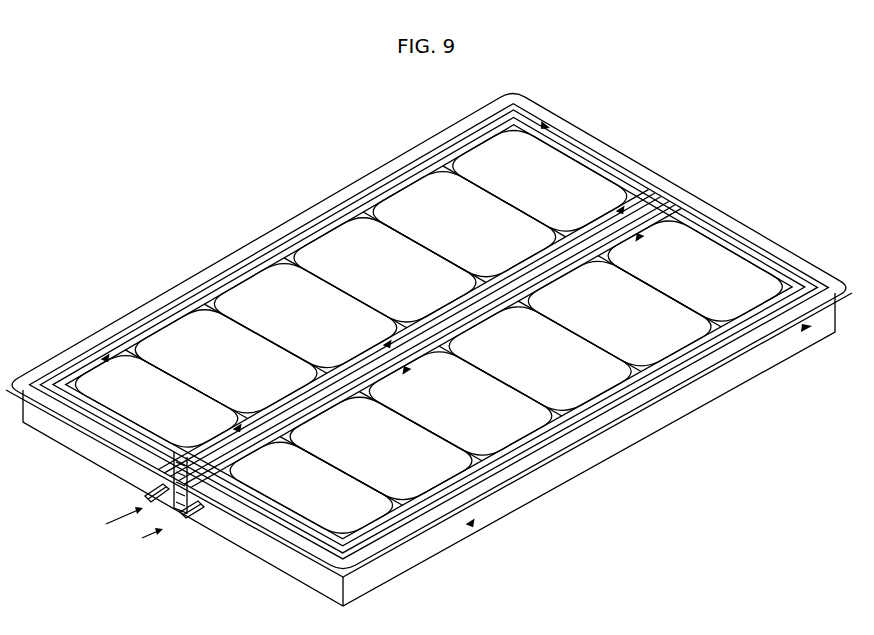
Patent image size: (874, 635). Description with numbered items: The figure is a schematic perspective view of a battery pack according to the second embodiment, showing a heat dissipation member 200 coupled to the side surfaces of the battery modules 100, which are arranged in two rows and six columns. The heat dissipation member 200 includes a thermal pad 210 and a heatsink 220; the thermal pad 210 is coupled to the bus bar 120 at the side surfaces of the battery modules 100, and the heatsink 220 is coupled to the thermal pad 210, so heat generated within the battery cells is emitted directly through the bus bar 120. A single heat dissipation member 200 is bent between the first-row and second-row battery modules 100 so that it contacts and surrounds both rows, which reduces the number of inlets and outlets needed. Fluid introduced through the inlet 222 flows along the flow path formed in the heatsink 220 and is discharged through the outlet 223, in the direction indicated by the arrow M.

The battery module 100 is at (592, 182).
The bus bar 120 is at (272, 250).
The heat dissipation member 200 is at (178, 208).
The thermal pad 210 is at (232, 263).
The heatsink 220 is at (190, 288).
The inlet 222 is at (156, 492).
The outlet 223 is at (190, 528).
The arrow M is at (134, 535).